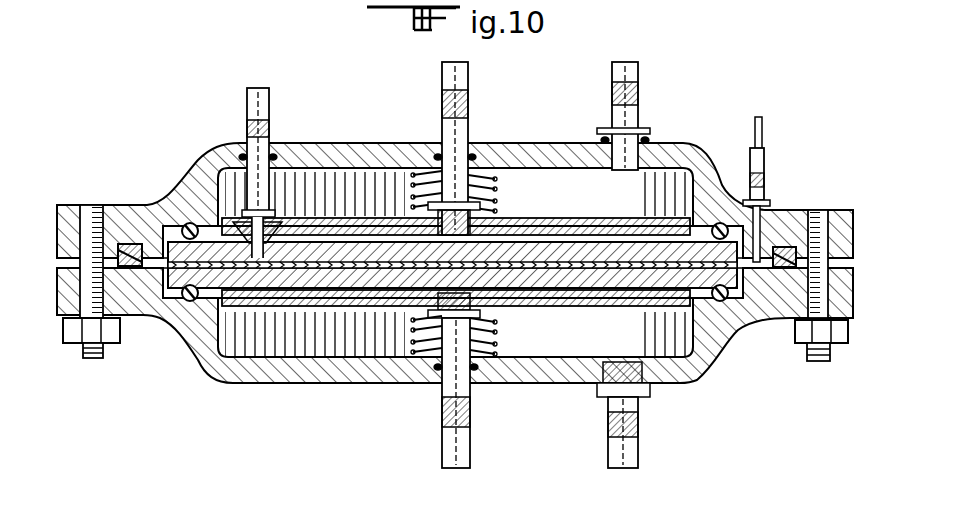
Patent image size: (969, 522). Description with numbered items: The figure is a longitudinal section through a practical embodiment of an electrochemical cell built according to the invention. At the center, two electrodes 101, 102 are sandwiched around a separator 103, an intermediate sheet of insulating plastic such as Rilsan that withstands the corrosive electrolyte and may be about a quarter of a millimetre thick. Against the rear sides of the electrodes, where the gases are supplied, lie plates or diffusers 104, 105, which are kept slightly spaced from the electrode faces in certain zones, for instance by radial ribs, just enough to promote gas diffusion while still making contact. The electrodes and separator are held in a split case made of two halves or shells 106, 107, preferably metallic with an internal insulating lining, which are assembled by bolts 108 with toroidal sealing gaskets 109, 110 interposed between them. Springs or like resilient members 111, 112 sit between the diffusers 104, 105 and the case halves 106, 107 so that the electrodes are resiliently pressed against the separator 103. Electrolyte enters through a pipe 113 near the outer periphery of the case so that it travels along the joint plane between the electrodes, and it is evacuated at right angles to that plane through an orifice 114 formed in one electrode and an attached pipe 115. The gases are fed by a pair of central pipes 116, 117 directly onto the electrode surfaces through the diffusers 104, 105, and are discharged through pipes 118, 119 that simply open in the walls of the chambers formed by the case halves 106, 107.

The electrode 101 is at (432, 264).
The electrode 102 is at (552, 289).
The separator 103 is at (600, 269).
The plate or diffuser 104 is at (605, 219).
The plate or diffuser 105 is at (568, 307).
The case half or shell 106 is at (690, 172).
The case half or shell 107 is at (720, 338).
The bolts 108 is at (90, 287).
The toroidal sealing gasket 109 is at (133, 243).
The toroidal sealing gasket 110 is at (191, 223).
The spring or resilient member 111 is at (500, 190).
The spring or resilient member 112 is at (497, 354).
The electrolyte supply pipe 113 is at (765, 162).
The orifice 114 is at (283, 243).
The electrolyte discharge pipe 115 is at (247, 100).
The central gas feed pipe 116 is at (468, 104).
The central gas feed pipe 117 is at (442, 415).
The gas discharge pipe 118 is at (640, 90).
The gas discharge pipe 119 is at (640, 427).